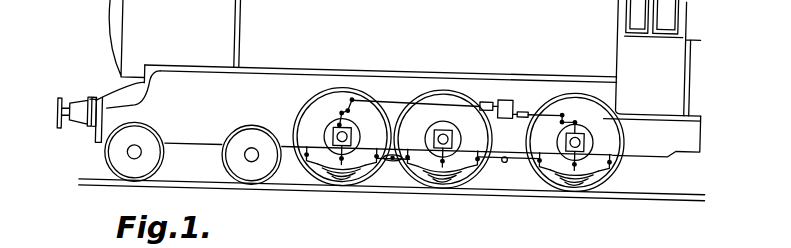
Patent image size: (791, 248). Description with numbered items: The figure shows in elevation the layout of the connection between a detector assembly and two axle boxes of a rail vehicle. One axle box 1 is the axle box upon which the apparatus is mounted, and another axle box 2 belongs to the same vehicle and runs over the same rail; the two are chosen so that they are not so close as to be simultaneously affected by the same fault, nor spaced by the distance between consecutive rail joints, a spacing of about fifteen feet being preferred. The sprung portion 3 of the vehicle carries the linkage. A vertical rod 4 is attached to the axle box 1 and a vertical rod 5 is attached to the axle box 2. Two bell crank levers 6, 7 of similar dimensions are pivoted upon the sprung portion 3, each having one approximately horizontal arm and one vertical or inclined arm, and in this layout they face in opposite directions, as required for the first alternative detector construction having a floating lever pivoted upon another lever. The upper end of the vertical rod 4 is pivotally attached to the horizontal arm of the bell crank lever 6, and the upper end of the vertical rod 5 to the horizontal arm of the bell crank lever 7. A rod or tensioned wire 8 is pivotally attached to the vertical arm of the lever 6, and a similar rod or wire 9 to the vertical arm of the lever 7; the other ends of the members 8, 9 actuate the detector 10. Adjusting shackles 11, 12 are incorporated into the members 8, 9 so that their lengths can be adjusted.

The axle box 1 is at (334, 130).
The axle box 2 is at (578, 148).
The sprung portion of the vehicle 3 is at (197, 149).
The vertical rod 4 is at (341, 114).
The vertical rod 5 is at (578, 126).
The bell crank lever 6 is at (352, 101).
The bell crank lever 7 is at (574, 117).
The rod 8 is at (399, 102).
The rod 9 is at (560, 109).
The detector 10 is at (506, 98).
The adjusting shackle 11 is at (482, 100).
The adjusting shackle 12 is at (520, 114).